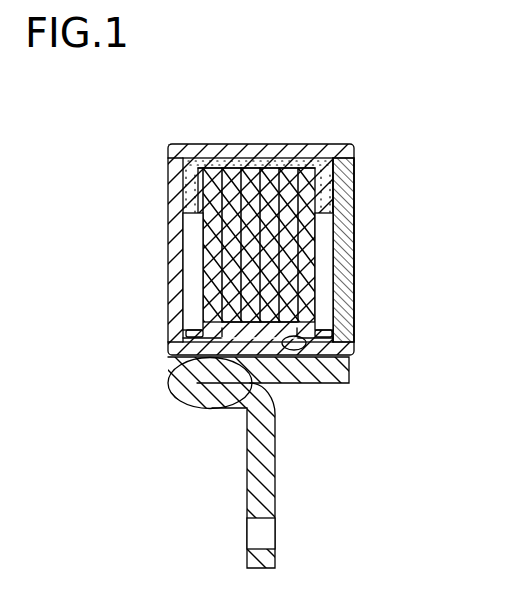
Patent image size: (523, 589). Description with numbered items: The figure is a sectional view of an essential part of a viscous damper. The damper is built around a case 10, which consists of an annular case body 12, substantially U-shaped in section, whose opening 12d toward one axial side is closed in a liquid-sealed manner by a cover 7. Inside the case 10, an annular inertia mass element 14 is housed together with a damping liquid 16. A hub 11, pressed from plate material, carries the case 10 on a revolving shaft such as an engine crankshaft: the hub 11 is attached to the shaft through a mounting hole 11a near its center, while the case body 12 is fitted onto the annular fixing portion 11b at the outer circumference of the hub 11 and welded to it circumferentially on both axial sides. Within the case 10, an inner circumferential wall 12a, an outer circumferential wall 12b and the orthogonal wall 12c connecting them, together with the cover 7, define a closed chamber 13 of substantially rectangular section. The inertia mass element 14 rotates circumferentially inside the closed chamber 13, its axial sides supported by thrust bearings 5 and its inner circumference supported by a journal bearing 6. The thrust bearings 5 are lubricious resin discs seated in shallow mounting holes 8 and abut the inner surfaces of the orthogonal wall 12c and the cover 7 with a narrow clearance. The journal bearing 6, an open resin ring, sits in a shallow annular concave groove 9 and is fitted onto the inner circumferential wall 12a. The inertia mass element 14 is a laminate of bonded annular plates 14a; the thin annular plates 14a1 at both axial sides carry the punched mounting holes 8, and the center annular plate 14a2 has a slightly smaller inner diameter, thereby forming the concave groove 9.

The thrust bearings 5 is at (185, 222).
The journal bearing 6 is at (258, 348).
The cover 7 is at (355, 248).
The mounting holes 8 is at (190, 240).
The annular concave groove 9 is at (325, 348).
The case 10 is at (167, 238).
The hub 11 is at (273, 462).
The mounting hole 11a is at (273, 534).
The annular fixing portion 11b is at (348, 380).
The case body 12 is at (172, 200).
The inner circumferential wall 12a is at (182, 398).
The outer circumferential wall 12b is at (193, 145).
The orthogonal wall 12c is at (175, 282).
The opening 12d is at (358, 172).
The closed chamber 13 is at (353, 192).
The inertia mass element 14 is at (280, 158).
The annular plates 14a is at (242, 163).
The thin annular plates 14a1 is at (190, 190).
The annular plate 14a2 is at (244, 168).
The damping liquid 16 is at (328, 298).